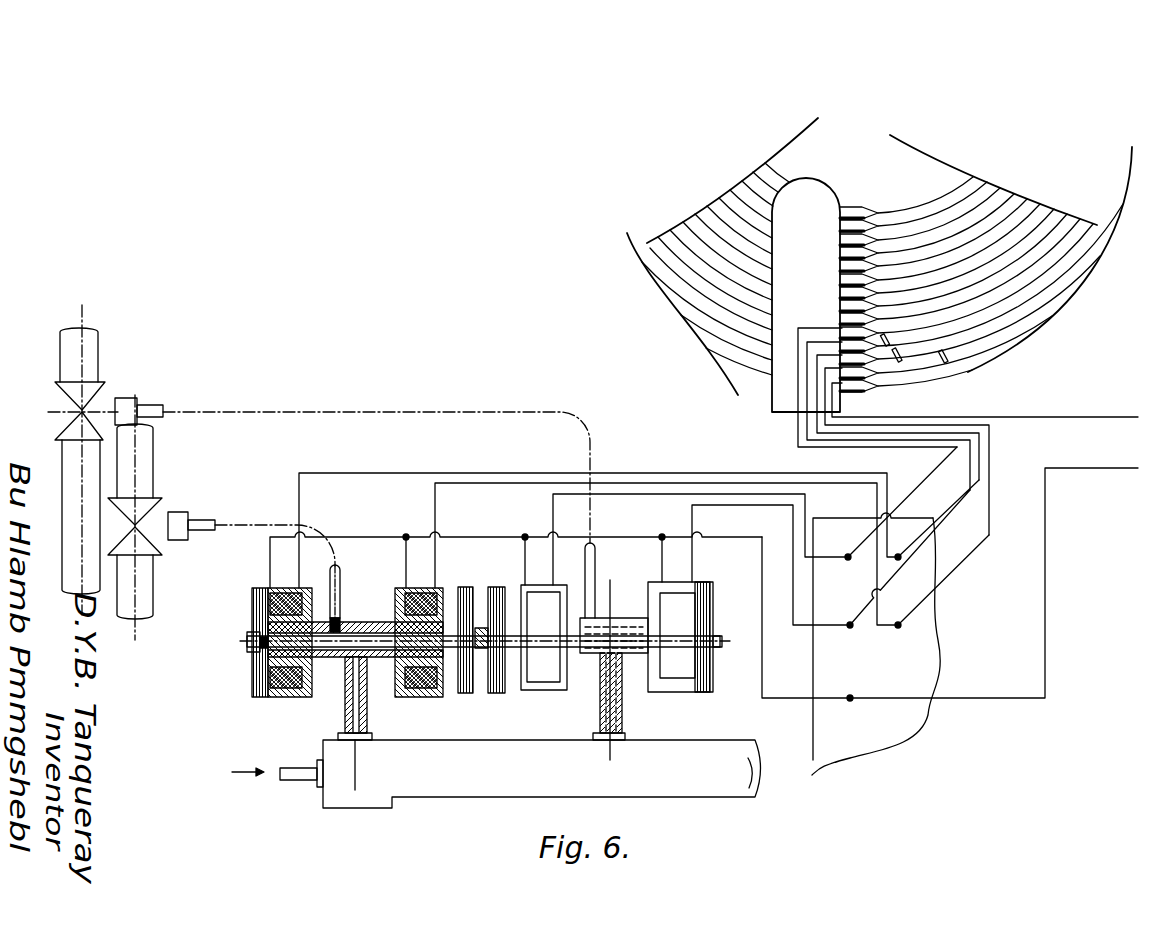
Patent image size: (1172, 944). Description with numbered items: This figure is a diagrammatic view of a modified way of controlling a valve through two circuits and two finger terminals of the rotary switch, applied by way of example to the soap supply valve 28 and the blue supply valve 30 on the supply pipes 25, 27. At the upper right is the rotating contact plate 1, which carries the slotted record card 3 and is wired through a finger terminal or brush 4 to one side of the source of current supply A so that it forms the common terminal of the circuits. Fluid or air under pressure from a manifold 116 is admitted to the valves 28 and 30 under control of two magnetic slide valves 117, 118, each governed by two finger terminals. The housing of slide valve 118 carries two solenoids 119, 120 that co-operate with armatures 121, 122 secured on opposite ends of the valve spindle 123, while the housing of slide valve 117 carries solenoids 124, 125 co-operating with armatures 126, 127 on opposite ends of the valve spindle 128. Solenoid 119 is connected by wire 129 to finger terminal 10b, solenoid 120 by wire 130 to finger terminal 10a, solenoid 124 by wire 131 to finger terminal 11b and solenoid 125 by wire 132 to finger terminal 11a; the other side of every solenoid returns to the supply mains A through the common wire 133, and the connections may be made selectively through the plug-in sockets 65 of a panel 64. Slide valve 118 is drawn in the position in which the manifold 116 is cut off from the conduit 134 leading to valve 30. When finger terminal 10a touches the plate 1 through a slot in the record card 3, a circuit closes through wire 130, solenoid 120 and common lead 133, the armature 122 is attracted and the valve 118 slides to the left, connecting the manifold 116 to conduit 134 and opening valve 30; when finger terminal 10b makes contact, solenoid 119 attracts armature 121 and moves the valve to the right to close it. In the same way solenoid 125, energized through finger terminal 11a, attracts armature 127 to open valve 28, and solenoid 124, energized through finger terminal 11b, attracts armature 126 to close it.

The contact plate 1 is at (1110, 222).
The record card 3 is at (1085, 236).
The finger terminal or brush 4 is at (867, 383).
The finger terminal 10a is at (866, 360).
The finger terminal 10b is at (887, 340).
The finger terminal 11a is at (838, 354).
The finger terminal 11b is at (838, 338).
The supply pipe 25 is at (92, 353).
The supply pipe 27 is at (148, 441).
The soap supply valve 28 is at (84, 410).
The blue supply valve 30 is at (158, 548).
The panel 64 is at (877, 644).
The plug-in sockets 65 is at (900, 625).
The source of current supply A is at (1124, 441).
The manifold 116 is at (690, 790).
The magnetic slide valve 117 is at (620, 657).
The magnetic slide valve 118 is at (373, 652).
The solenoid 119 is at (268, 598).
The solenoid 120 is at (437, 598).
The armature 121 is at (262, 612).
The armature 122 is at (466, 693).
The valve spindle 123 is at (320, 652).
The solenoid 124 is at (527, 600).
The solenoid 125 is at (703, 598).
The armature 126 is at (500, 693).
The armature 127 is at (703, 670).
The valve spindle 128 is at (602, 636).
The wire 129 is at (475, 473).
The wire 130 is at (492, 483).
The wire 131 is at (632, 494).
The wire 132 is at (738, 505).
The common wire 133 is at (762, 658).
The conduit 134 is at (340, 583).